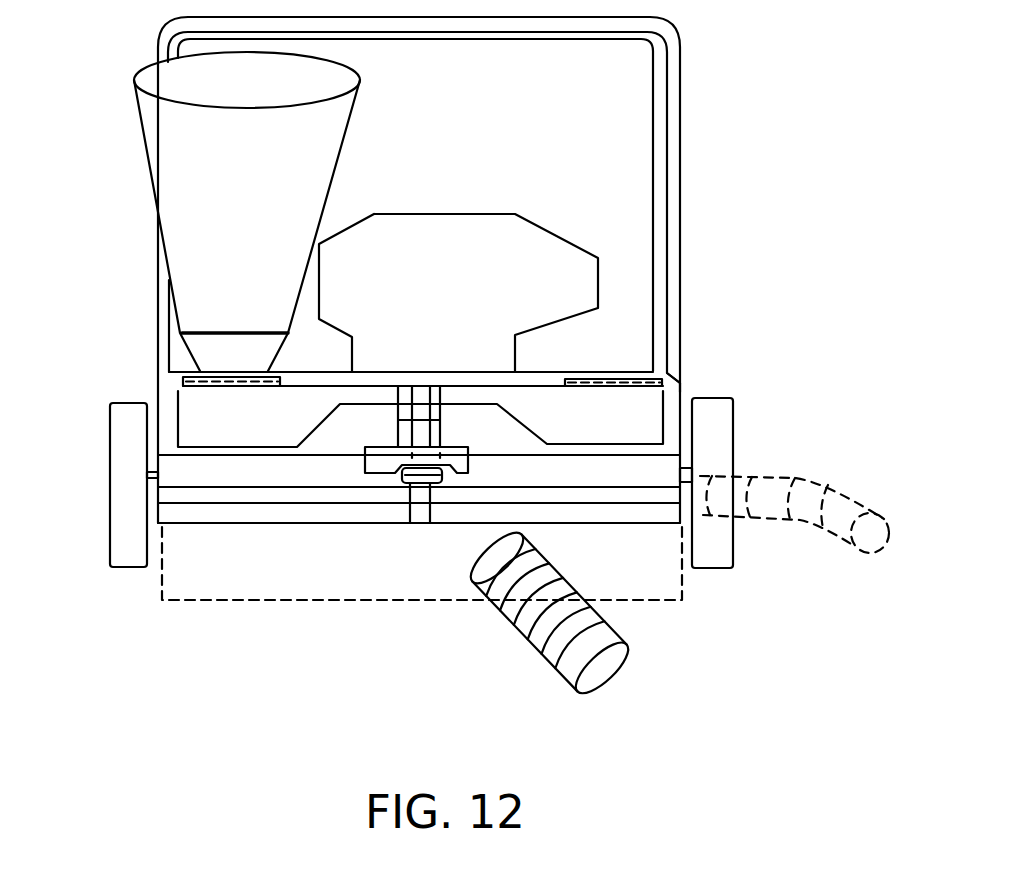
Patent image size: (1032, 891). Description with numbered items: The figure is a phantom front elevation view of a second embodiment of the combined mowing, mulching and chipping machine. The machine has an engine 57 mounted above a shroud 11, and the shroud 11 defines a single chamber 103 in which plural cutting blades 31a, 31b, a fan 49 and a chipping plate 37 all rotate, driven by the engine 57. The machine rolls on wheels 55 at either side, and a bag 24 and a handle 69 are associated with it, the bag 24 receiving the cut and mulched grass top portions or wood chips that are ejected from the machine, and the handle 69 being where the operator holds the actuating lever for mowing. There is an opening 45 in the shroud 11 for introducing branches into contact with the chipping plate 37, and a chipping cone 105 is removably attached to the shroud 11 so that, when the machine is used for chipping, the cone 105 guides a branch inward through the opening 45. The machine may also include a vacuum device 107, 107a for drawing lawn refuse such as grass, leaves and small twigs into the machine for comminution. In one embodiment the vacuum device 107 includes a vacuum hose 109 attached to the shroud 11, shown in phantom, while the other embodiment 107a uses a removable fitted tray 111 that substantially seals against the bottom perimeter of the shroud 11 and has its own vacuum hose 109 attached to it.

The bag 24 is at (605, 85).
The handle 69 is at (673, 150).
The shroud 11 is at (682, 382).
The chipping cone 105 is at (178, 148).
The engine 57 is at (550, 275).
The opening 45 is at (203, 373).
The fan 49 is at (200, 392).
The single chamber 103 is at (167, 405).
The cutting blade 31a is at (227, 503).
The cutting blade 31b is at (314, 490).
The chipping plate 37 is at (267, 392).
The wheels 55 is at (725, 398).
The removable fitted tray 111 is at (683, 600).
The vacuum device 107 is at (785, 445).
The vacuum hose 109 is at (853, 475).
The vacuum device 107a is at (443, 637).